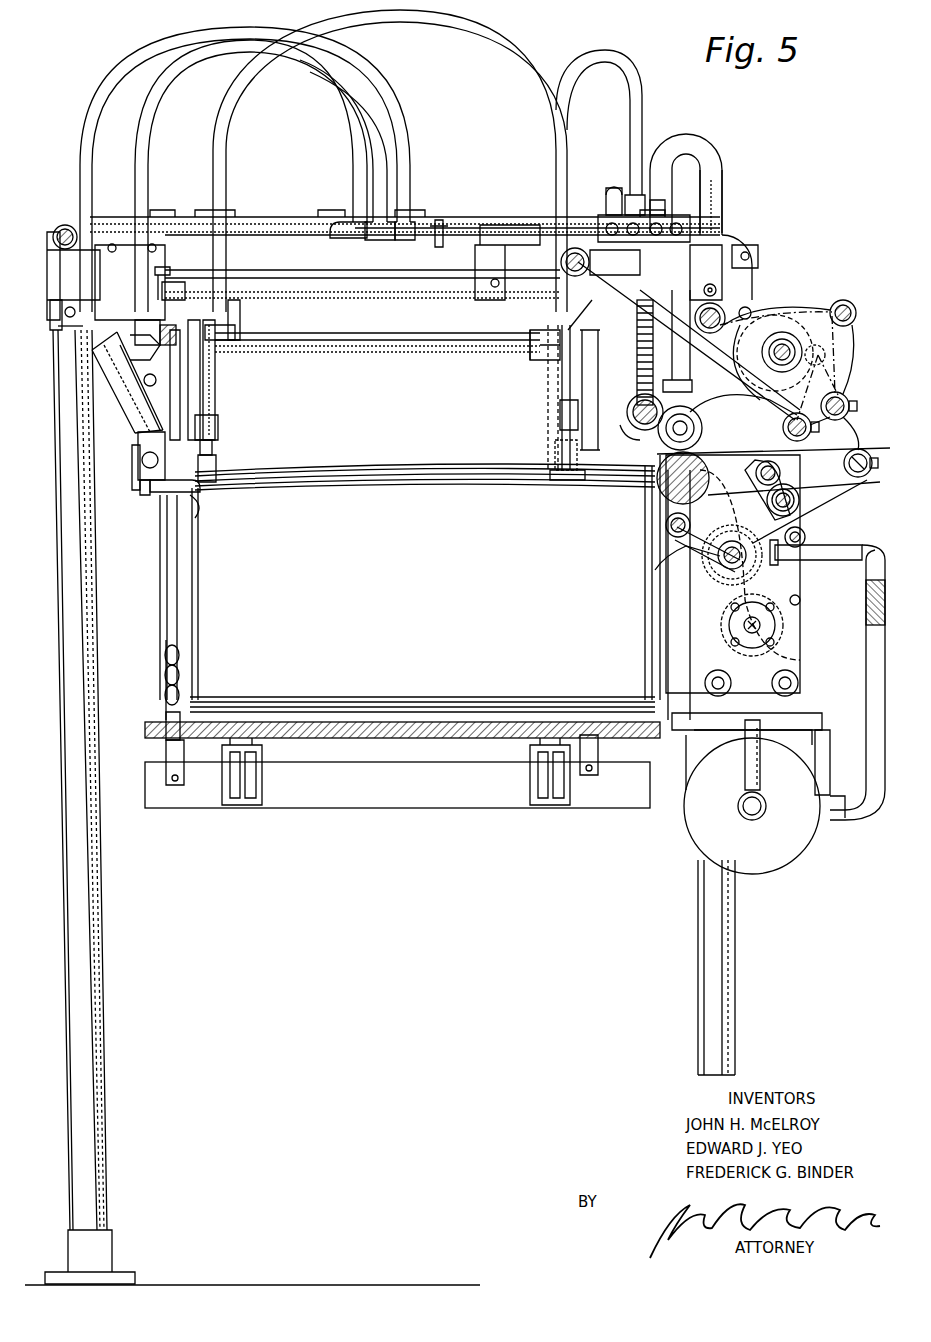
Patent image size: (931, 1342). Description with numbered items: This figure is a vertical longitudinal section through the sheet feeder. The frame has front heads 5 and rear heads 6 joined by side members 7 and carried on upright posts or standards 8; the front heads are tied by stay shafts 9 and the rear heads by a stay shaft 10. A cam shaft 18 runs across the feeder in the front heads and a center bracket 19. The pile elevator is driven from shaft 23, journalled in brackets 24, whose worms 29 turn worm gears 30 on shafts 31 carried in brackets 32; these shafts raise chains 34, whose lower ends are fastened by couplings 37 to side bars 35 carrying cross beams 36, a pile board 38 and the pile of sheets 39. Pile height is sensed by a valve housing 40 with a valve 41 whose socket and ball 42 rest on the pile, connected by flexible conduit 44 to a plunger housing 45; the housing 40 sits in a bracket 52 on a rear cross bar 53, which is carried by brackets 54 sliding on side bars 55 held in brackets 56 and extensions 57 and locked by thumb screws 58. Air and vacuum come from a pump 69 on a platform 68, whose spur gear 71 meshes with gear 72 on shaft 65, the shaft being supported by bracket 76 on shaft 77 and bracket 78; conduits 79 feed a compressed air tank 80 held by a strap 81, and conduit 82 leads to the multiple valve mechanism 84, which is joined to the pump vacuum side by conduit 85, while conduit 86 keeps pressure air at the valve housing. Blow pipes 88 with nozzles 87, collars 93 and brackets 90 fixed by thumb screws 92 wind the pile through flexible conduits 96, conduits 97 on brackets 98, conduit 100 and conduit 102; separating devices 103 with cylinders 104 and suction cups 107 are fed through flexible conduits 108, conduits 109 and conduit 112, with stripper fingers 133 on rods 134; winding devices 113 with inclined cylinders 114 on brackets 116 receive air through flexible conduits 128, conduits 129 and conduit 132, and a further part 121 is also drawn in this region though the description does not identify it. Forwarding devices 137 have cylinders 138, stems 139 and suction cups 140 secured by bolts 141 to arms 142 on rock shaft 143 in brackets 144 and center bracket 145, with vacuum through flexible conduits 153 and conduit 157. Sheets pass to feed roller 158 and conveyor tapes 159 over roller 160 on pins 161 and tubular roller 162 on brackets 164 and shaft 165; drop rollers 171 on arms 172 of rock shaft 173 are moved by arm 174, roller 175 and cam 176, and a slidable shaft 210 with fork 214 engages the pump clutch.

The front heads 5 is at (738, 220).
The rear heads 6 is at (55, 230).
The side members 7 is at (275, 222).
The upright posts or standards 8 is at (62, 922).
The stay shafts 9 is at (712, 348).
The stay shaft 10 is at (47, 252).
The cam shaft 18 is at (800, 335).
The center bracket 19 is at (748, 375).
The shaft 23 is at (636, 403).
The brackets 24 is at (658, 468).
The worms 29 is at (627, 437).
The worm gears 30 is at (645, 365).
The shafts 31 is at (388, 336).
The brackets 32 is at (186, 210).
The chains 34 is at (164, 694).
The side bars 35 is at (348, 752).
The cross beams 36 is at (262, 753).
The couplings or connections 37 is at (166, 758).
The pile board 38 is at (415, 738).
The pile of sheets 39 is at (422, 588).
The valve housing 40 is at (218, 428).
The valve 41 is at (212, 446).
The socket and ball 42 is at (200, 492).
The flexible conduit 44 is at (230, 335).
The plunger housing 45 is at (405, 12).
The bracket 52 is at (162, 428).
The rear cross bar 53 is at (136, 330).
The brackets 54 is at (170, 282).
The side bars 55 is at (303, 262).
The brackets 56 is at (478, 258).
The extensions 57 is at (50, 311).
The thumb screws 58 is at (162, 266).
The shaft 65 is at (752, 540).
The platform 68 is at (800, 715).
The pump 69 is at (800, 600).
The spur gear 71 is at (798, 658).
The gear 72 is at (740, 518).
The bracket 76 is at (662, 562).
The shaft 77 is at (668, 535).
The bracket 78 is at (704, 680).
The conduits 79 is at (866, 672).
The compressed air tank 80 is at (795, 860).
The strap 81 is at (828, 758).
The conduit 82 is at (685, 365).
The multiple valve mechanism 84 is at (748, 240).
The conduit 85 is at (688, 275).
The conduit 86 is at (732, 770).
The nozzles 87 is at (204, 510).
The blow pipes 88 is at (136, 456).
The brackets 90 is at (222, 306).
The thumb screws 92 is at (136, 360).
The locking and adjusting collars 93 is at (130, 280).
The flexible conduits 96 is at (152, 104).
The conduits 97 is at (352, 242).
The brackets 98 is at (445, 225).
The conduit 100 is at (712, 190).
The conduit 102 is at (708, 160).
The suction sheet separating devices 103 is at (228, 386).
The cylinder 104 is at (216, 404).
The rubber suction cup 107 is at (218, 458).
The flexible conduits 108 is at (222, 172).
The conduits 109 is at (478, 225).
The conduit 112 is at (612, 185).
The winding devices 113 is at (124, 420).
The inclined cylinder 114 is at (76, 358).
The bracket 116 is at (126, 390).
The rods 121 is at (152, 596).
The flexible conduits 128 is at (106, 100).
The conduits 129 is at (388, 242).
The conduit 132 is at (685, 133).
The stripper fingers 133 is at (140, 490).
The rods 134 is at (132, 468).
The forwarding device 137 is at (543, 400).
The cylinder 138 is at (556, 412).
The tubular stem 139 is at (555, 446).
The rubber suction cup 140 is at (588, 475).
The bolts 141 is at (545, 380).
The arm 142 is at (598, 300).
The rock shaft 143 is at (560, 258).
The brackets 144 is at (532, 332).
The center bracket 145 is at (636, 322).
The flexible conduits 153 is at (612, 54).
The conduit 157 is at (622, 195).
The feed roller 158 is at (662, 486).
The conveyor tapes 159 is at (750, 455).
The roller 160 is at (858, 452).
The pins 161 is at (878, 495).
The tubular roller 162 is at (800, 502).
The brackets 164 is at (820, 515).
The shaft 165 is at (756, 470).
The drop rollers 171 is at (702, 428).
The arms 172 is at (742, 398).
The rock shaft 173 is at (798, 445).
The arm 174 is at (840, 352).
The roller 175 is at (852, 326).
The cam 176 is at (755, 318).
The shaft 210 is at (760, 485).
The fork 214 is at (790, 560).